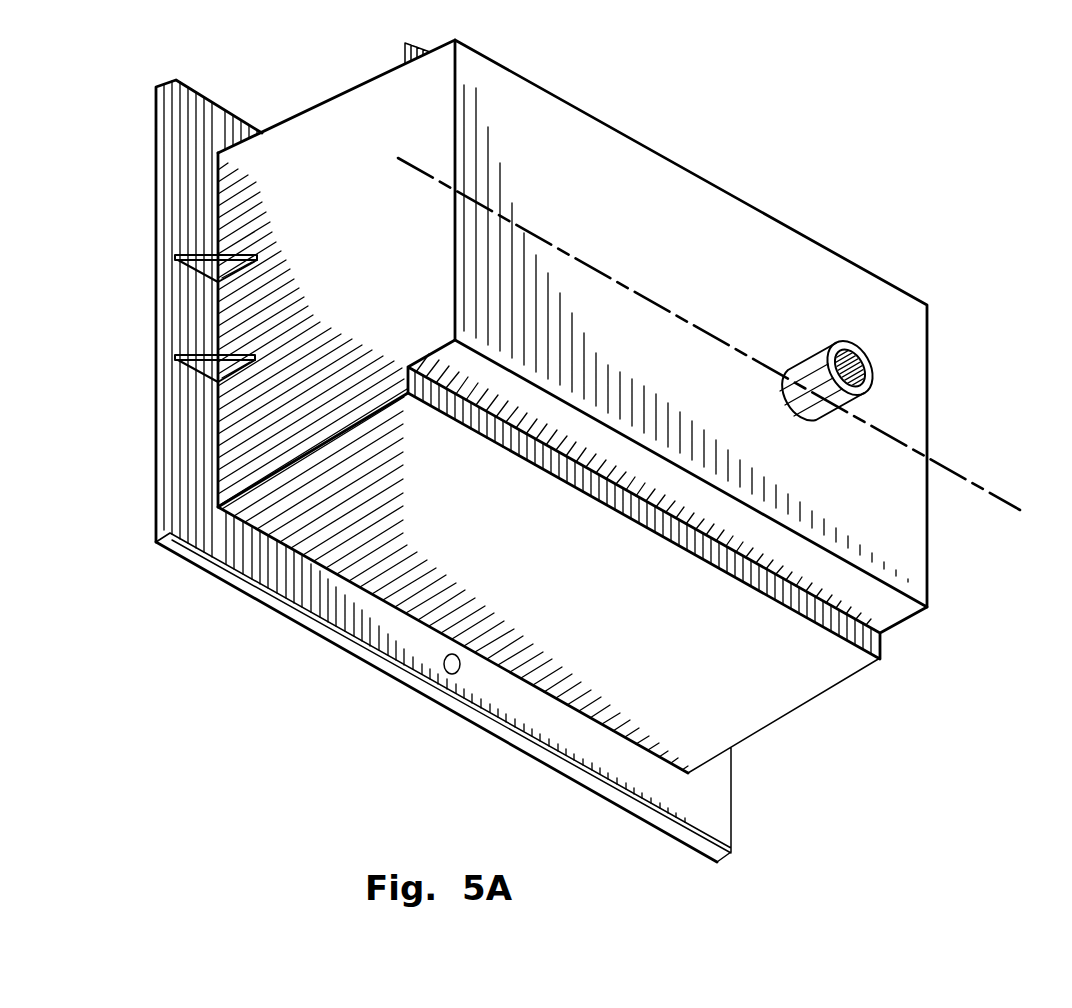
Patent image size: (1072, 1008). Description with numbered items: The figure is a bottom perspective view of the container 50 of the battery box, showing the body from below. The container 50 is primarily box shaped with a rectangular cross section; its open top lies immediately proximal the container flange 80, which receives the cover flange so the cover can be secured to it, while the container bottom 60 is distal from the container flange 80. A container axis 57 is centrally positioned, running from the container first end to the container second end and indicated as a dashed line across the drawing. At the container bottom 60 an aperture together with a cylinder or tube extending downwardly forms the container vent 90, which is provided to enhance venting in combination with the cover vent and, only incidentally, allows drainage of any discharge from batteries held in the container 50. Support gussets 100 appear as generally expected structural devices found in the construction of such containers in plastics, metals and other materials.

The container 50 is at (543, 108).
The container axis 57 is at (957, 472).
The container bottom 60 is at (580, 158).
The container flange 80 is at (188, 120).
The container vent 90 is at (811, 356).
The support gussets 100 is at (228, 355).